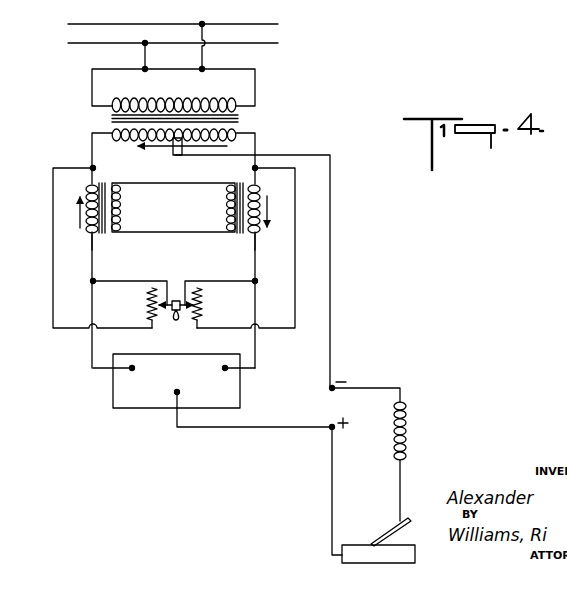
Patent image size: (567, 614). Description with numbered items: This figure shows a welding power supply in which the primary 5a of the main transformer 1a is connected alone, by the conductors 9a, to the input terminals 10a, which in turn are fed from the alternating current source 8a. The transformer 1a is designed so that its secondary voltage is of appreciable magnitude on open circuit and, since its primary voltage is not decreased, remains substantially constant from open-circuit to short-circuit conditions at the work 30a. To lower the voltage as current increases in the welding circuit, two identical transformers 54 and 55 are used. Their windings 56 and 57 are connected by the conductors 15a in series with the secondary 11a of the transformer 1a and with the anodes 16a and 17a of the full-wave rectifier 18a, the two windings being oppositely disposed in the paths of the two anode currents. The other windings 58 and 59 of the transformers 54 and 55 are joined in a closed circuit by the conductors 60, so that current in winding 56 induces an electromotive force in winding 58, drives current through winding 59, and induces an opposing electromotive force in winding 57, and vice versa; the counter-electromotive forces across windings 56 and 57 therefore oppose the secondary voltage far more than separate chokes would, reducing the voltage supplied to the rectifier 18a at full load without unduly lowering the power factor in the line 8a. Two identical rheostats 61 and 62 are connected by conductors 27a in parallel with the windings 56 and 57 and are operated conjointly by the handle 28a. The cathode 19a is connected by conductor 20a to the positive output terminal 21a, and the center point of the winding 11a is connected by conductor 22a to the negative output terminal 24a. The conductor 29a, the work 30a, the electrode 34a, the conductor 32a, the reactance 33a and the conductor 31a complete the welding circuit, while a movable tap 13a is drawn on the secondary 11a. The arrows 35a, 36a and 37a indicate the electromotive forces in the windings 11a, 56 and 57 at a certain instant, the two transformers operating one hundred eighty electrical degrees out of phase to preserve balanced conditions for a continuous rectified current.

The transformer 1a is at (246, 118).
The primary 5a is at (186, 98).
The alternating current source 8a is at (257, 35).
The conductors 9a is at (274, 86).
The input terminals 10a is at (199, 65).
The secondary 11a is at (152, 142).
The adjustable tap 13a is at (176, 156).
The conductors 15a is at (262, 310).
The anode 16a is at (130, 369).
The anode 17a is at (225, 369).
The full-wave rectifier 18a is at (143, 405).
The cathode 19a is at (176, 394).
The conductor 20a is at (257, 428).
The positive output terminal 21a is at (328, 431).
The conductor 22a is at (336, 317).
The negative output terminal 24a is at (336, 379).
The conductors 27a is at (216, 337).
The handle 28a is at (176, 321).
The conductor 29a is at (332, 513).
The work 30a is at (362, 543).
The conductor 31a is at (390, 385).
The conductor 32a is at (402, 483).
The reactance 33a is at (411, 425).
The electrode 34a is at (397, 535).
The arrow 35a is at (208, 147).
The arrow 36a is at (78, 222).
The arrow 37a is at (270, 208).
The transformer 54 is at (116, 173).
The transformer 55 is at (243, 236).
The winding 56 is at (90, 231).
The winding 57 is at (252, 233).
The winding 58 is at (122, 208).
The winding 59 is at (228, 207).
The conductors 60 is at (186, 180).
The rheostat 61 is at (145, 304).
The rheostat 62 is at (205, 305).